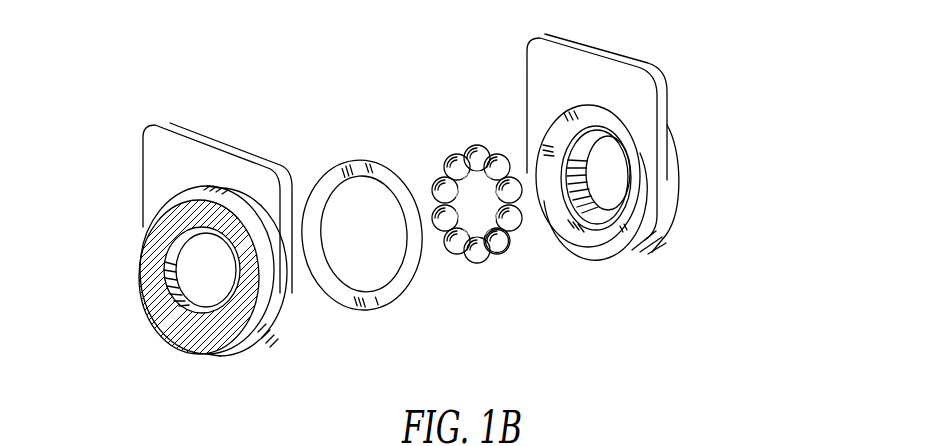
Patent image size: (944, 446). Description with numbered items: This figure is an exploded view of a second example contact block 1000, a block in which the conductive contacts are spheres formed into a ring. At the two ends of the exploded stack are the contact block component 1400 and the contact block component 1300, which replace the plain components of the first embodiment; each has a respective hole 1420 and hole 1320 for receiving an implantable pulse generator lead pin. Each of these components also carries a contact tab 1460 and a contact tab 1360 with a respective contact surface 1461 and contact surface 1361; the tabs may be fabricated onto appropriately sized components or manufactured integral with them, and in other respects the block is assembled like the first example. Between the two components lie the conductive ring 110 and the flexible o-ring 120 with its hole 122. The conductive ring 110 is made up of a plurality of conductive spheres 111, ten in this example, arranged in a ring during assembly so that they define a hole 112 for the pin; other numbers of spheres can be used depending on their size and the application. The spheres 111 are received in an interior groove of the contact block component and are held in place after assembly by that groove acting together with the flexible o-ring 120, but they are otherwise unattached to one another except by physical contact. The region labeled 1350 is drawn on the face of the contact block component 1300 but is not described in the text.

The contact block 1000 is at (703, 315).
The conductive ring 110 is at (453, 247).
The conductive sphere 111 is at (503, 247).
The hole 112 is at (477, 217).
The flexible o-ring 120 is at (368, 300).
The hole 122 is at (352, 193).
The contact block component 1300 is at (652, 245).
The hole 1320 is at (612, 158).
The second housing bearing seat 1350 is at (593, 237).
The contact tab 1360 is at (540, 73).
The contact surface 1361 is at (592, 50).
The contact block component 1400 is at (289, 270).
The hole 1420 is at (203, 283).
The contact tab 1460 is at (175, 152).
The contact surface 1461 is at (220, 140).